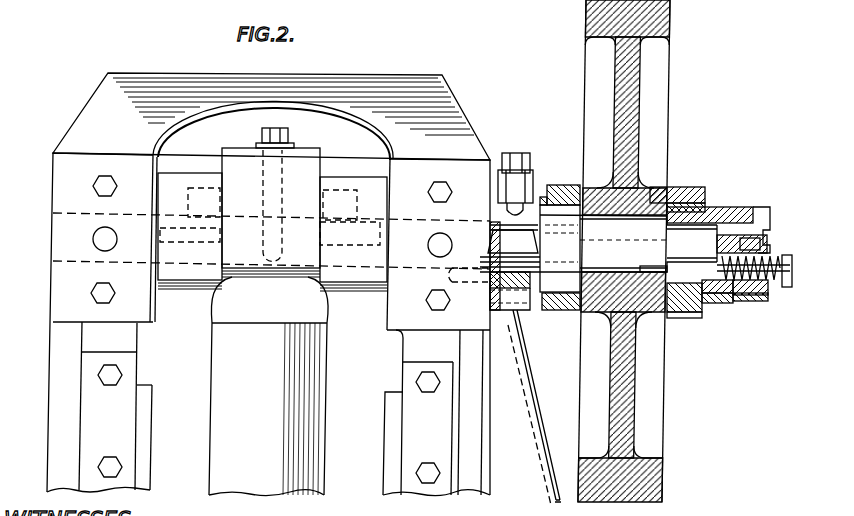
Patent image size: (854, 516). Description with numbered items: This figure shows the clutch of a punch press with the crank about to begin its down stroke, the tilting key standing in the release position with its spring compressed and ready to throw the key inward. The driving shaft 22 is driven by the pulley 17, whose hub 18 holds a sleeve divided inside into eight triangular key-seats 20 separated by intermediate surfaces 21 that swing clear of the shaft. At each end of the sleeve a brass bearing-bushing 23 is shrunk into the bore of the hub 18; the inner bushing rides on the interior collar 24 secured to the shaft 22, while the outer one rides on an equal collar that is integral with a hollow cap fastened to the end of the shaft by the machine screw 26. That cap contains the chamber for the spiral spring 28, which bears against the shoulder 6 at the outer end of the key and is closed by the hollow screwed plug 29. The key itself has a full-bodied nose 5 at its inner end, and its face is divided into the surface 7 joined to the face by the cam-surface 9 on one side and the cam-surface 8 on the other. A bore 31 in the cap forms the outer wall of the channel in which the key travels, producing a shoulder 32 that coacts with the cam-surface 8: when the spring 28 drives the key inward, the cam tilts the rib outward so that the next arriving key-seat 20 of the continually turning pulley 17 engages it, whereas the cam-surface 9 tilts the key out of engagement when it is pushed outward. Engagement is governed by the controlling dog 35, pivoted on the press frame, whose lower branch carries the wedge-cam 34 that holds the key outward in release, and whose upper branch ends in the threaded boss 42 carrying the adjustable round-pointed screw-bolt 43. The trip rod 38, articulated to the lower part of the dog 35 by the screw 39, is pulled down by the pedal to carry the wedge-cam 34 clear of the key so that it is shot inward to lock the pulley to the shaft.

The nose 5 is at (482, 257).
The shoulder 6 is at (717, 244).
The surface 7 is at (712, 293).
The cam-surface 8 is at (740, 244).
The cam-surface 9 is at (650, 272).
The pulley 17 is at (622, 110).
The hub 18 is at (665, 186).
The key-seats 20 is at (637, 186).
The intermediate surfaces 21 is at (770, 253).
The driving shaft 22 is at (628, 243).
The bearing-bushings 23 is at (558, 186).
The interior collar 24 is at (560, 248).
The machine screw 26 is at (770, 212).
The spiral spring 28 is at (738, 301).
The plug 29 is at (784, 287).
The bore 31 is at (670, 318).
The shoulder 32 is at (720, 303).
The wedge-cam 34 is at (490, 286).
The dog 35 is at (712, 240).
The trip rod 38 is at (530, 386).
The screw 39 is at (513, 311).
The boss 42 is at (498, 184).
The screw-bolt 43 is at (527, 157).